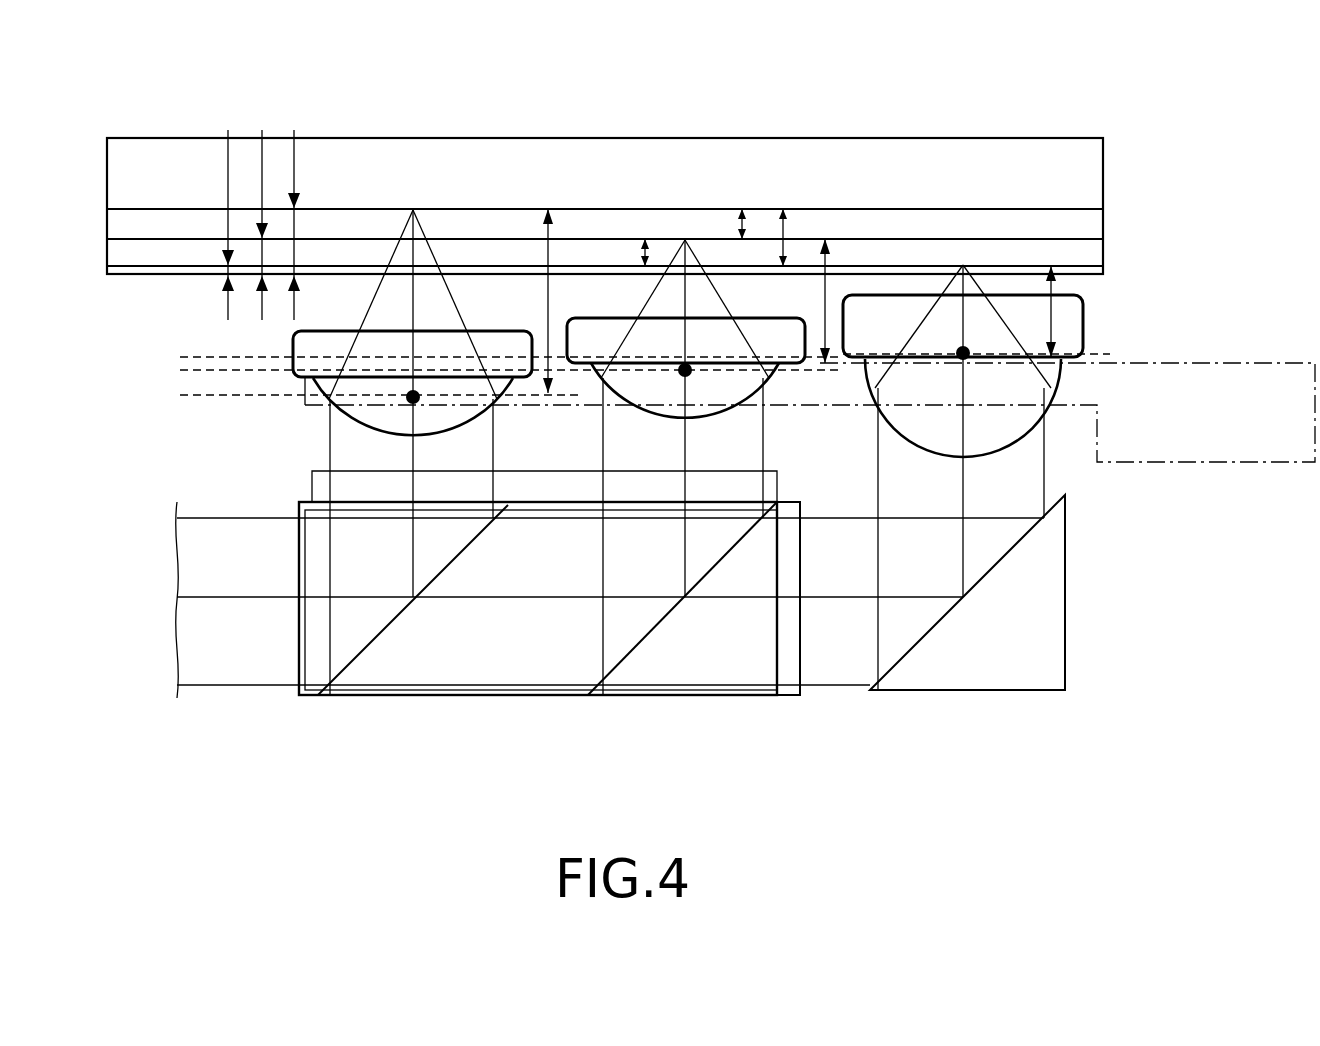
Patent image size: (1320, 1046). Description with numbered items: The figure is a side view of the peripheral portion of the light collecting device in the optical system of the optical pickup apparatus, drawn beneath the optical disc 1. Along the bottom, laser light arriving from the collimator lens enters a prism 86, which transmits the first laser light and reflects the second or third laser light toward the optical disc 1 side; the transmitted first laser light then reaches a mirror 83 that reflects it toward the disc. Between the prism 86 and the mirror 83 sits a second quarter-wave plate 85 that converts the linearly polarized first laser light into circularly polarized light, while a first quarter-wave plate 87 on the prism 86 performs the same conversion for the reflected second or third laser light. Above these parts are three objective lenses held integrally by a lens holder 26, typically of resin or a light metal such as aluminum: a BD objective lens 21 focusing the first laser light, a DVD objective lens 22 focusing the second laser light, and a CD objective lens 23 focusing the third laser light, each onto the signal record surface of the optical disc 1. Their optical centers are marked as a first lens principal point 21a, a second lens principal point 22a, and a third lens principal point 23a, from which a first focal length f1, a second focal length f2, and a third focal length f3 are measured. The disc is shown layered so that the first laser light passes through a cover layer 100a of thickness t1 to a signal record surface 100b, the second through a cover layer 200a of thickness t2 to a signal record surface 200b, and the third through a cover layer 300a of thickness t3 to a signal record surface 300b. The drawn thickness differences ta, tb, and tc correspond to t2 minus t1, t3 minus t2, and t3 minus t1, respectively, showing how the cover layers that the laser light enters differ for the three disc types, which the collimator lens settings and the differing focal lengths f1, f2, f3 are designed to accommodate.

The optical disc 1 is at (673, 124).
The cover layer of the CD 300a is at (1104, 213).
The cover layer of the DVD 200a is at (1104, 245).
The cover layer of the BD 100a is at (1104, 272).
The signal record surface of the CD 300b is at (140, 211).
The signal record surface of the DVD 200b is at (140, 240).
The signal record surface of the BD 100b is at (192, 267).
The thickness of the cover layer of the BD t1 is at (228, 208).
The thickness of the cover layer of the DVD t2 is at (261, 208).
The thickness of the cover layer of the CD t3 is at (295, 208).
The difference between cover layer thicknesses of the BD and DVD ta is at (644, 237).
The difference between cover layer thicknesses of the DVD and CD tb is at (741, 207).
The difference between cover layer thicknesses of the CD and BD tc is at (781, 221).
The first focal length f1 is at (1083, 306).
The second focal length f2 is at (813, 301).
The third focal length f3 is at (535, 301).
The BD objective lens 21 is at (880, 310).
The DVD objective lens 22 is at (588, 332).
The CD objective lens 23 is at (335, 345).
The first lens principal point 21a is at (960, 360).
The second lens principal point 22a is at (681, 376).
The third lens principal point 23a is at (409, 403).
The lens holder 26 is at (1150, 463).
The mirror 83 is at (985, 676).
The second λ/4 plate 85 is at (788, 692).
The prism 86 is at (530, 674).
The first λ/4 plate 87 is at (312, 482).